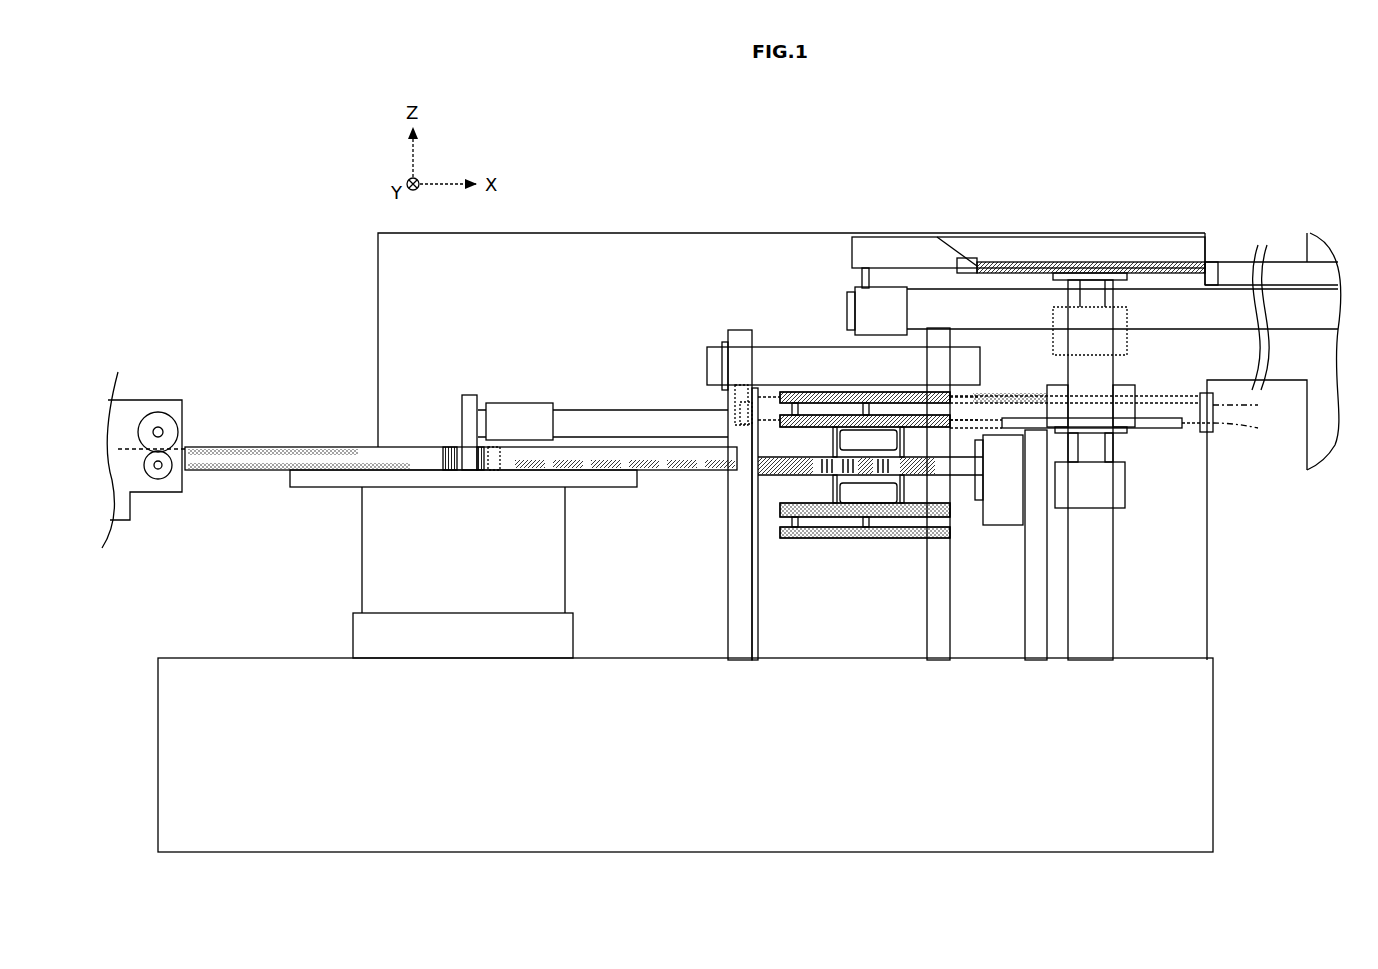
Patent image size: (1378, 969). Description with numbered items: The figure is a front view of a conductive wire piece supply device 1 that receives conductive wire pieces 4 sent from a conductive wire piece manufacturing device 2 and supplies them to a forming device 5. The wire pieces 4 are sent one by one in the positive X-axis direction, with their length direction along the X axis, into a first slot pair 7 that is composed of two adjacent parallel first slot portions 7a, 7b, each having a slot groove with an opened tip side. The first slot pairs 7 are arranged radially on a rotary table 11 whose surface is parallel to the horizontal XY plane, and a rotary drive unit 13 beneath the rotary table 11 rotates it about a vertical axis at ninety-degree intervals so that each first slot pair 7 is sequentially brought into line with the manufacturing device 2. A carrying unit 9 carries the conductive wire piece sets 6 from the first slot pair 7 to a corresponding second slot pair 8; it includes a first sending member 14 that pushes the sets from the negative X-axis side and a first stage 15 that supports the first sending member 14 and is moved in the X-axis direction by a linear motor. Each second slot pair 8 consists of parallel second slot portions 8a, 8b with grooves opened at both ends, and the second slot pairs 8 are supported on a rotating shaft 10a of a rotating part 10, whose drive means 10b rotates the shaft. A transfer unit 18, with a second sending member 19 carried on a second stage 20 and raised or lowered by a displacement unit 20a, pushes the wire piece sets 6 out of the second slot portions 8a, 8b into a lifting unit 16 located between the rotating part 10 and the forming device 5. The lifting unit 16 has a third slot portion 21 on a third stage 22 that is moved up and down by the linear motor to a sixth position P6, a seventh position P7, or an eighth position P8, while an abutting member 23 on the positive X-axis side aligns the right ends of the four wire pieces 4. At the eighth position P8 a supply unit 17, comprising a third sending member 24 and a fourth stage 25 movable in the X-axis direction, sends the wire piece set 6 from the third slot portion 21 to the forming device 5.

The conductive wire piece supply device 1 is at (1040, 133).
The conductive wire piece manufacturing device 2 is at (172, 378).
The conductive wire piece 4 is at (290, 447).
The forming device 5 is at (1290, 225).
The conductive wire piece set 6 is at (700, 522).
The first slot pair 7 is at (222, 445).
The first slot portion 7a is at (450, 472).
The first slot portion 7b is at (478, 472).
The second slot pair 8 is at (840, 312).
The second slot portion 8a is at (810, 392).
The second slot portion 8b is at (835, 392).
The carrying unit 9 is at (480, 385).
The rotating part 10 is at (972, 520).
The rotating shaft 10a is at (822, 457).
The drive means 10b is at (1003, 525).
The rotary table 11 is at (306, 488).
The rotary drive unit 13 is at (353, 628).
The first sending member 14 is at (500, 452).
The first stage 15 is at (513, 403).
The lifting unit 16 is at (1160, 470).
The supply unit 17 is at (838, 248).
The transfer unit 18 is at (707, 340).
The second sending member 19 is at (732, 420).
The second stage 20 is at (750, 342).
The displacement unit 20a is at (738, 402).
The third slot portion 21 is at (1083, 262).
The third stage 22 is at (1125, 495).
The abutting member 23 is at (1215, 430).
The third sending member 24 is at (977, 258).
The fourth stage 25 is at (853, 290).
The sixth position P6 is at (1249, 426).
The seventh position P7 is at (1249, 406).
The eighth position P8 is at (1212, 262).